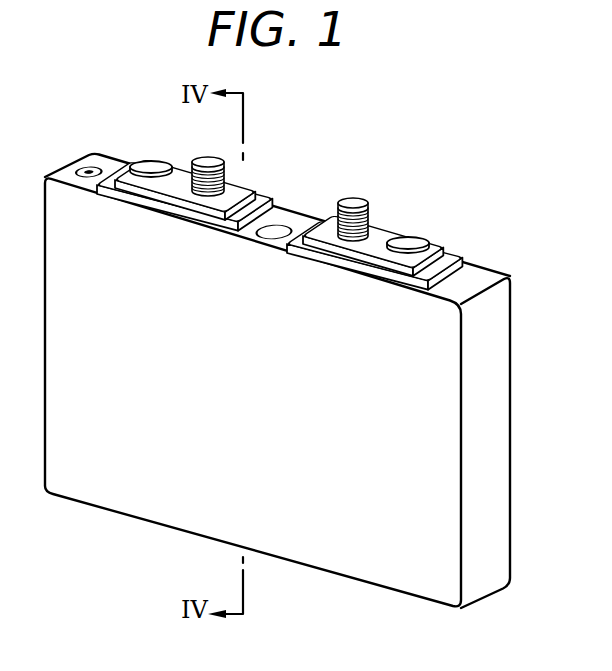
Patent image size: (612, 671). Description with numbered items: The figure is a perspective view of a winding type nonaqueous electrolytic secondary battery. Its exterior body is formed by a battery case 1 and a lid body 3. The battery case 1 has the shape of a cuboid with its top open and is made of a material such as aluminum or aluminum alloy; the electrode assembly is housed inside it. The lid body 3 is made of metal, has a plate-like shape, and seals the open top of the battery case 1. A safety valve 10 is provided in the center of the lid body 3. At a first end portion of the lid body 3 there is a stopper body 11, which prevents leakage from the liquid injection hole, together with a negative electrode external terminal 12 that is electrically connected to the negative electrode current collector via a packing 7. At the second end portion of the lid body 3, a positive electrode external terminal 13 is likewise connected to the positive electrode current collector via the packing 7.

The battery case 1 is at (177, 528).
The lid body 3 is at (484, 273).
The packing 7 is at (195, 210).
The safety valve 10 is at (278, 226).
The stopper body 11 is at (84, 166).
The negative electrode external terminal 12 is at (206, 159).
The positive electrode external terminal 13 is at (354, 200).